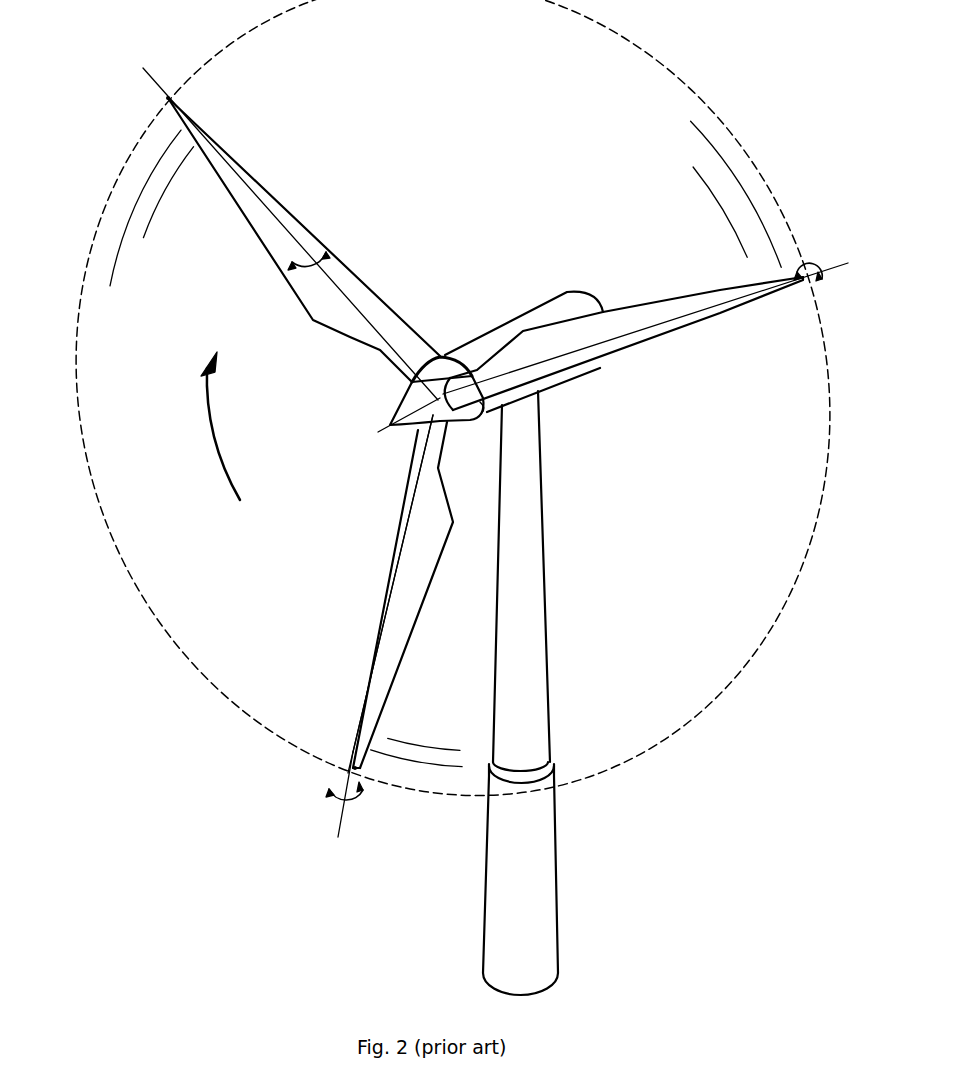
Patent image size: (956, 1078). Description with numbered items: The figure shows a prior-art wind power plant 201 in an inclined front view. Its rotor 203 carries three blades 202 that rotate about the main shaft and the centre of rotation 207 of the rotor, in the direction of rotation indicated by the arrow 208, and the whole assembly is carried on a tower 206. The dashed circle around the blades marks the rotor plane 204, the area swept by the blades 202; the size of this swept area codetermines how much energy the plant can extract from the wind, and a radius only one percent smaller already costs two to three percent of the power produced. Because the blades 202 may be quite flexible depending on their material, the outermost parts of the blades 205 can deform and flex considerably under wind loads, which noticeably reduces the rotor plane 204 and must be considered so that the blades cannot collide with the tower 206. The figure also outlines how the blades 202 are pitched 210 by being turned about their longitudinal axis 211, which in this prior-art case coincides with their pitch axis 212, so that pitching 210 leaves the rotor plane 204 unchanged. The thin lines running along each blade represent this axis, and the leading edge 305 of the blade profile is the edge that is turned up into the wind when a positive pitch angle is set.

The wind power plant 201 is at (488, 268).
The blades 202 is at (258, 215).
The rotor 203 is at (448, 370).
The rotor plane 204 is at (187, 580).
The outermost parts of the blades 205 is at (165, 100).
The tower 206 is at (527, 678).
The centre of rotation 207 is at (437, 402).
The arrow 208 is at (203, 438).
The pitching 210 is at (313, 270).
The longitudinal axis 211 is at (393, 585).
The pitch axis 212 is at (338, 823).
The leading edge 305 is at (382, 630).